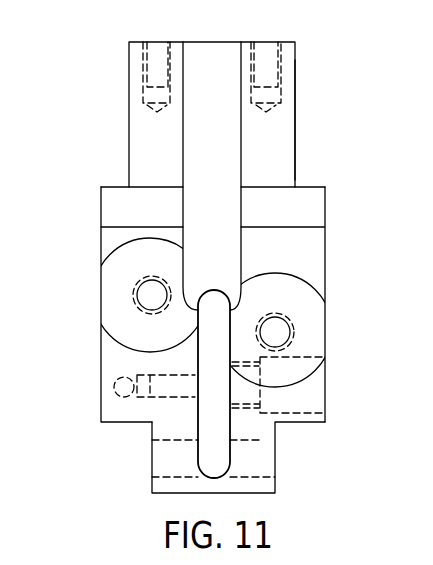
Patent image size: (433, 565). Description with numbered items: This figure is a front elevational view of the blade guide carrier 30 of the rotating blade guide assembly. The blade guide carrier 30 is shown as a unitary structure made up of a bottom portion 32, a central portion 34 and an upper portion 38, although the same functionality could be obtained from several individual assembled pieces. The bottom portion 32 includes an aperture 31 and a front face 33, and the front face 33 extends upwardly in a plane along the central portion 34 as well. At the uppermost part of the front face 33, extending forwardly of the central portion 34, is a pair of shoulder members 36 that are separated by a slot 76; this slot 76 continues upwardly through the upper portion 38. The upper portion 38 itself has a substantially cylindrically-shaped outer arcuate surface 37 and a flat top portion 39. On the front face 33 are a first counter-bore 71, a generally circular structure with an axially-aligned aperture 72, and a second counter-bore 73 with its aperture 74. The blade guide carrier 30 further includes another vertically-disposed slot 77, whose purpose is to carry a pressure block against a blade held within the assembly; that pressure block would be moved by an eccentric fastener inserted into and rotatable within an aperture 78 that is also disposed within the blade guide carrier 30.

The blade guide carrier 30 is at (61, 172).
The aperture 31 is at (253, 440).
The bottom portion 32 is at (275, 465).
The front face 33 is at (300, 248).
The central portion 34 is at (100, 353).
The shoulder members 36 is at (300, 198).
The outer arcuate surface 37 is at (143, 127).
The upper portion 38 is at (295, 128).
The flat top portion 39 is at (243, 40).
The first counter-bore 71 is at (110, 275).
The aperture 72 is at (140, 293).
The second counter-bore 73 is at (307, 312).
The aperture 74 is at (290, 333).
The slot 76 is at (208, 60).
The vertically-disposed slot 77 is at (200, 428).
The aperture 78 is at (150, 400).